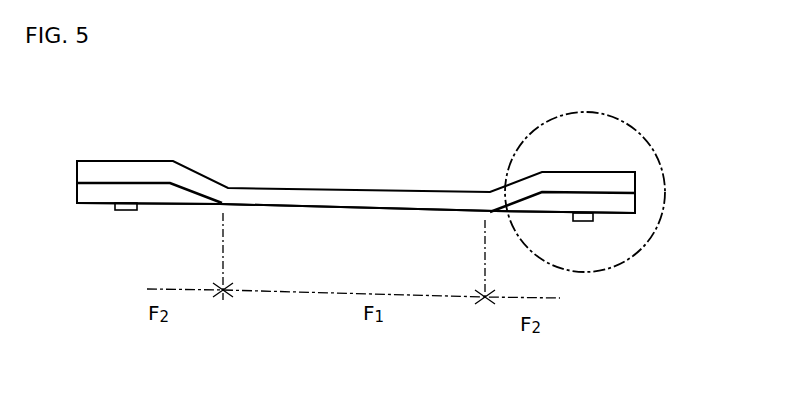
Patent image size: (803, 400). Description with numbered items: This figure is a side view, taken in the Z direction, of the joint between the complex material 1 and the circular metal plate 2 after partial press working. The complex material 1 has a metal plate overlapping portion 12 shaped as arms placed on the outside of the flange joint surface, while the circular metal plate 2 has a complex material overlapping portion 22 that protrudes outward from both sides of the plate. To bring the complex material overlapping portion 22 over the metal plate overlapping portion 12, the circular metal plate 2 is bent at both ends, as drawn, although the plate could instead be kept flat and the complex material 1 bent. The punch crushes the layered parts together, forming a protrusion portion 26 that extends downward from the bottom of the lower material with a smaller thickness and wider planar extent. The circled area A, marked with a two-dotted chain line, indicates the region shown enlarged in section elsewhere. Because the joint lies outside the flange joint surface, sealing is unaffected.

The complex material 1 is at (175, 205).
The circular metal plate 2 is at (423, 190).
The metal plate overlapping portion 12 is at (88, 204).
The complex material overlapping portion 22 is at (118, 161).
The protrusion portion 26 is at (125, 211).
The detail region A is at (623, 123).